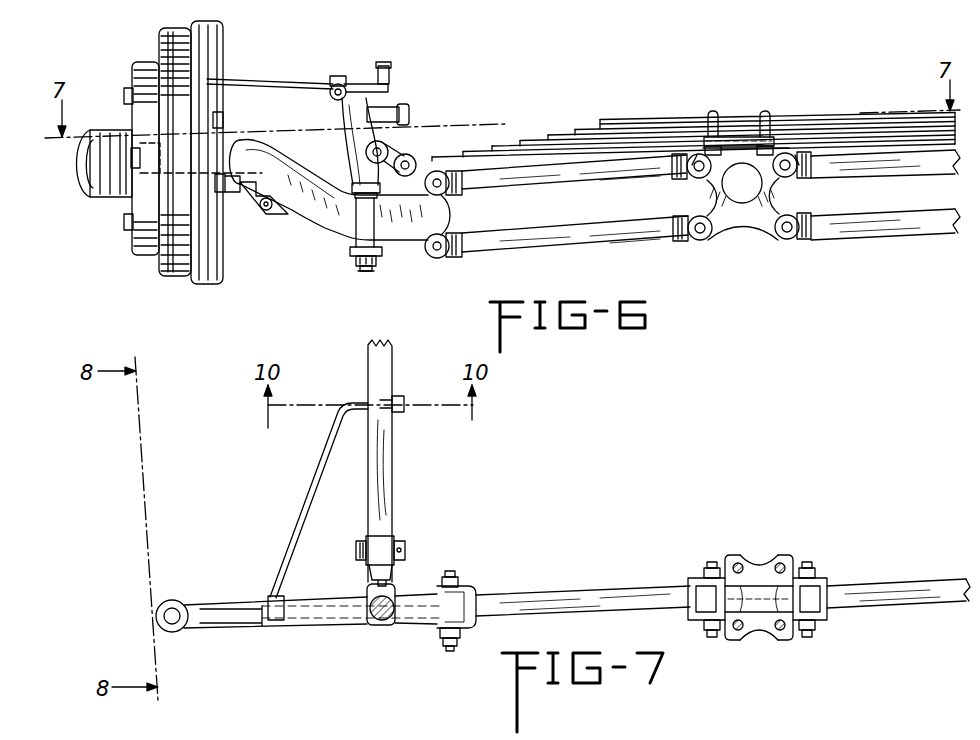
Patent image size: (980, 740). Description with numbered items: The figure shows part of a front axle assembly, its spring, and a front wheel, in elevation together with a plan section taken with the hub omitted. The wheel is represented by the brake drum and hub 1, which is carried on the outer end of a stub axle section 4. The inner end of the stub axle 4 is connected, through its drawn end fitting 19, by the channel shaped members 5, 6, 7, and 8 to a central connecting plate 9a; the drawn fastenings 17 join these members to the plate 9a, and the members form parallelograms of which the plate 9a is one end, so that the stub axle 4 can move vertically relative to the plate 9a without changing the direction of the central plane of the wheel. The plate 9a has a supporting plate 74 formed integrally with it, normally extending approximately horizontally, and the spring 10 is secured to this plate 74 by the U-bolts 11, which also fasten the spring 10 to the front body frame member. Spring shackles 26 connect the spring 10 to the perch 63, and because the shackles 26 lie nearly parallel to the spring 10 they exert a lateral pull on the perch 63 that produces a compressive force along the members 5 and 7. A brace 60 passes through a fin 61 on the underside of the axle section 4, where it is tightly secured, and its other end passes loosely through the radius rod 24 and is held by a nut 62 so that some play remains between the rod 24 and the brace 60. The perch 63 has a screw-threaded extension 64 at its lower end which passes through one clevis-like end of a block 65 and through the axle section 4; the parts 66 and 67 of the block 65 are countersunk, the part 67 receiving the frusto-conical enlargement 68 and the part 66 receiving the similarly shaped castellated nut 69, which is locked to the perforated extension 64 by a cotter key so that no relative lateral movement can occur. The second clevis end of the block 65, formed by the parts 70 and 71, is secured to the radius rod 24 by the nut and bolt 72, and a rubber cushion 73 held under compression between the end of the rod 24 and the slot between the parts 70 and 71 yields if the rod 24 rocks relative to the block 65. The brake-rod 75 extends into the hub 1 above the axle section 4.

In FIG. 6, the brake drums and hubs 1 is at (170, 155).
In FIG. 6, the stub axle 4 is at (292, 172).
In FIG. 7, the stub axle 4 is at (335, 625).
In FIG. 6, the channel shaped member 5 is at (576, 170).
In FIG. 7, the channel shaped member 5 is at (655, 596).
In FIG. 6, the channel shaped member 6 is at (620, 230).
In FIG. 6, the channel shaped member 7 is at (930, 170).
In FIG. 7, the channel shaped member 7 is at (885, 590).
In FIG. 6, the channel shaped member 8 is at (905, 220).
In FIG. 6, the central connecting plate 9a is at (752, 212).
In FIG. 6, the spring 10 is at (624, 125).
In FIG. 6, the U-bolts 11 is at (765, 110).
In FIG. 7, the U-bolts 11 is at (782, 630).
In FIG. 6, the rod end clamp 17 is at (694, 180).
In FIG. 7, the rod end clamp 17 is at (712, 566).
In FIG. 6, the clevis 19 is at (450, 180).
In FIG. 7, the clevis 19 is at (460, 578).
In FIG. 7, the radius rod 24 is at (392, 478).
In FIG. 6, the spring shackles 26 is at (400, 160).
In FIG. 7, the brace 60 is at (310, 487).
In FIG. 6, the fin 61 is at (298, 207).
In FIG. 7, the nut 62 is at (396, 398).
In FIG. 6, the perch 63 is at (345, 130).
In FIG. 6, the screw-threaded extension 64 is at (372, 265).
In FIG. 7, the block 65 is at (398, 596).
In FIG. 6, the part of block 66 is at (355, 250).
In FIG. 6, the part of block 67 is at (355, 190).
In FIG. 6, the frusto-conical enlargement 68 is at (360, 188).
In FIG. 6, the nut 69 is at (365, 262).
In FIG. 7, the part of block 70 is at (394, 540).
In FIG. 7, the part of block 71 is at (360, 540).
In FIG. 7, the nut and bolt 72 is at (405, 548).
In FIG. 7, the rubber cushion 73 is at (392, 568).
In FIG. 6, the supporting plate 74 is at (731, 137).
In FIG. 7, the supporting plate 74 is at (768, 558).
In FIG. 6, the brake-rod 75 is at (275, 80).